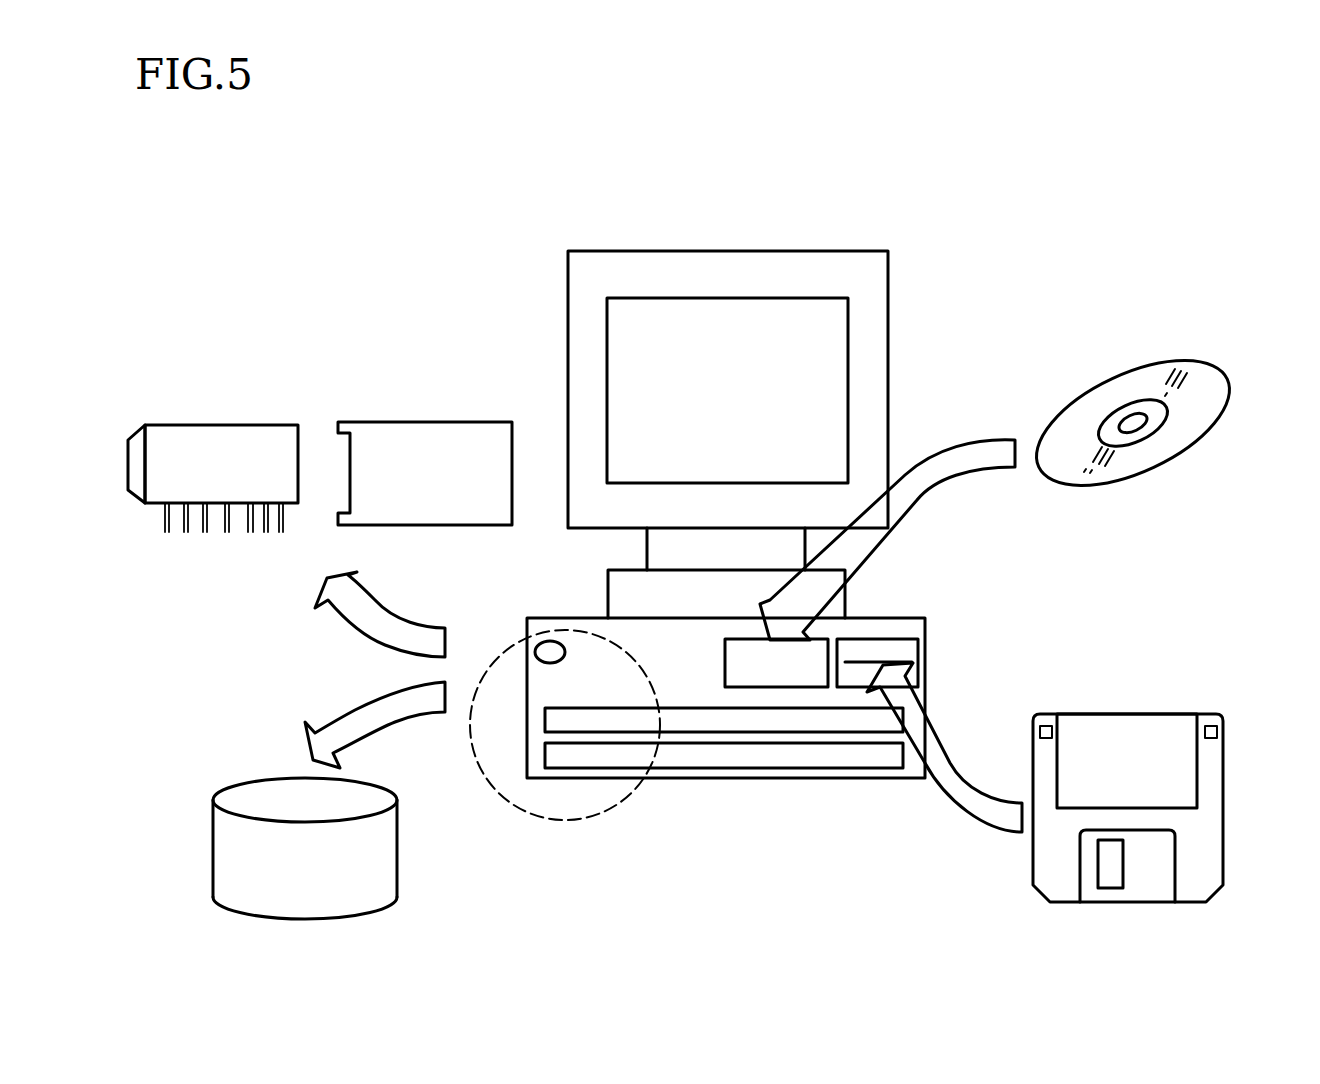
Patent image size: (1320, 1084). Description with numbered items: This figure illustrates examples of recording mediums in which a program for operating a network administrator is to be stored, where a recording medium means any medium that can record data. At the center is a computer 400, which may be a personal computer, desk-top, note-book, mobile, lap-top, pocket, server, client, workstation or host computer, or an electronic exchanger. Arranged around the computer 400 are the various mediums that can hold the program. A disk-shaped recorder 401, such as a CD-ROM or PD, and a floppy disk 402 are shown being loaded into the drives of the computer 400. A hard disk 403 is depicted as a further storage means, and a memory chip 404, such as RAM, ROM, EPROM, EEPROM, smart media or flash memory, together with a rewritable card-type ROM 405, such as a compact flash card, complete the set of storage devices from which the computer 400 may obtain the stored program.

The computer 400 is at (888, 290).
The disk-shaped recorder 401 is at (1218, 378).
The floppy disk 402 is at (1223, 737).
The hard disk 403 is at (213, 870).
The memory chip 404 is at (178, 424).
The rewritable card-type ROM 405 is at (382, 422).